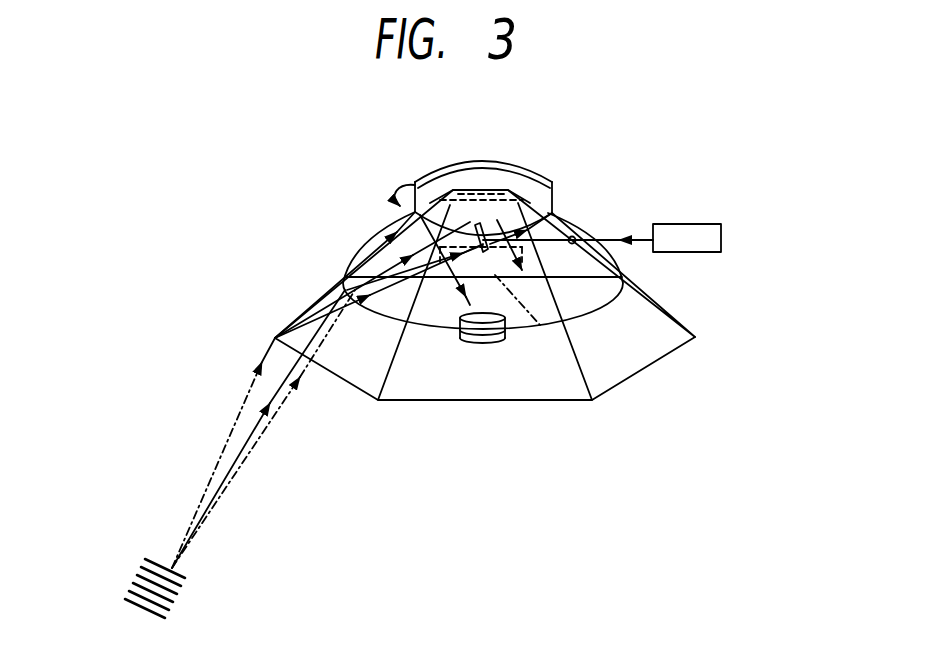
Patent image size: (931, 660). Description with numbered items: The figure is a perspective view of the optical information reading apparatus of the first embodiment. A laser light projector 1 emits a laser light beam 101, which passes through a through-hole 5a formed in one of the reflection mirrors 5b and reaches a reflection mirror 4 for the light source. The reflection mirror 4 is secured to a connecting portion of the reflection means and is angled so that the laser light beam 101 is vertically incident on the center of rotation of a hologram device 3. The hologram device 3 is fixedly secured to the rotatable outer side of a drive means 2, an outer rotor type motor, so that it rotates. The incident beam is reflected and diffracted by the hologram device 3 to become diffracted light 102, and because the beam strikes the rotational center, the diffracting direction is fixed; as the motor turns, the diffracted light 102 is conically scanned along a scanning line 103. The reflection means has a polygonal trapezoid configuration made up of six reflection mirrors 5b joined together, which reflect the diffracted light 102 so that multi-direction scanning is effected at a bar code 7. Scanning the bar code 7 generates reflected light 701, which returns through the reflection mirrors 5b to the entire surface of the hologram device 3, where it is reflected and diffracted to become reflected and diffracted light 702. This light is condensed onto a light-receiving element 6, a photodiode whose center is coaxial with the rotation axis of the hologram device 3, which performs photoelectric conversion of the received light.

The laser light projector 1 is at (713, 252).
The drive means 2 is at (523, 165).
The hologram device 3 is at (480, 189).
The reflection mirror 4 is at (477, 226).
The through-hole 5a is at (575, 238).
The reflection mirrors 5b is at (510, 213).
The light-receiving element 6 is at (490, 344).
The optical information recording medium 7 is at (180, 583).
The scanning line 103 is at (432, 330).
The laser light beam 101 is at (618, 236).
The diffracted light 102 is at (358, 278).
The reflected light 701 is at (232, 481).
The reflected and diffracted light 702 is at (540, 325).